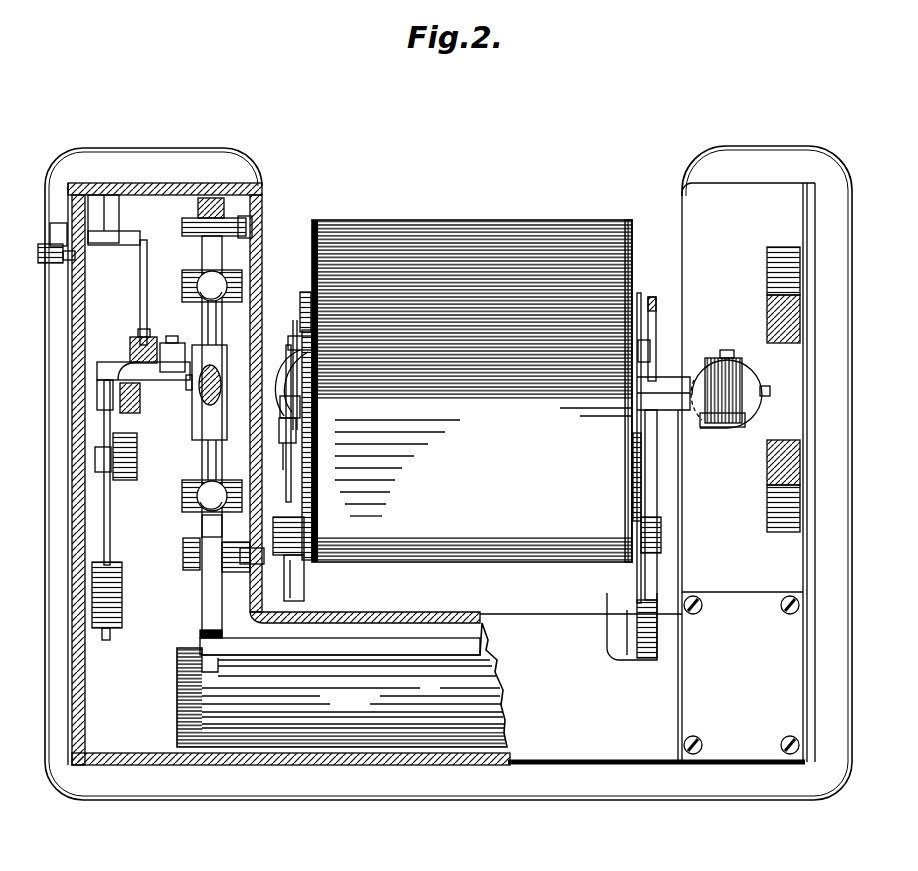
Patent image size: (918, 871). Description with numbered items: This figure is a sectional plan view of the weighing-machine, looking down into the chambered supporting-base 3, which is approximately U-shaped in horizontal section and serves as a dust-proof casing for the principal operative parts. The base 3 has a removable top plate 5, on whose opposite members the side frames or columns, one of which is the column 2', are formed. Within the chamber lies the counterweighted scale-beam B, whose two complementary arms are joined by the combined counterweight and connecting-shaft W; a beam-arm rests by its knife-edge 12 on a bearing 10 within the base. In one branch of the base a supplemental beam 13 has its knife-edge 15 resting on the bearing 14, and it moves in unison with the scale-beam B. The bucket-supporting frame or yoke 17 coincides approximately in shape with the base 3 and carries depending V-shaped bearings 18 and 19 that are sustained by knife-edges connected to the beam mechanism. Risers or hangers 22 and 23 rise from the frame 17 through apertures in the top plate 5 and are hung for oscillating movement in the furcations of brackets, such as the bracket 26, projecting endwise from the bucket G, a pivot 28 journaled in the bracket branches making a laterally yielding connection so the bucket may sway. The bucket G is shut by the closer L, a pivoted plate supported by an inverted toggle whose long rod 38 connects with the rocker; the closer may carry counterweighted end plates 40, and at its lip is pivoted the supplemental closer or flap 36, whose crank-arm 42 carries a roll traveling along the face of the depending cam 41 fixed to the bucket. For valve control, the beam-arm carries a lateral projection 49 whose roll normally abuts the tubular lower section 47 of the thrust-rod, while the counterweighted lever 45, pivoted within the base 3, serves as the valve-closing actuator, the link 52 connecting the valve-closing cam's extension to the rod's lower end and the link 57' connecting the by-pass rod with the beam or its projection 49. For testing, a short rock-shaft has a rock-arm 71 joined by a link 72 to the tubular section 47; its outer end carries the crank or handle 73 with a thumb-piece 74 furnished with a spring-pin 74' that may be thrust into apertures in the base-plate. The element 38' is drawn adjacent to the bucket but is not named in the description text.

The side frame or column 2' is at (754, 472).
The chambered supporting-base 3 is at (488, 801).
The top plate 5 is at (565, 744).
The bearing 10 is at (201, 574).
The knife-edge 12 is at (185, 556).
The supplemental beam 13 is at (216, 188).
The bearing 14 is at (183, 194).
The knife-edge 15 is at (198, 228).
The bucket-supporting frame or yoke 17 is at (206, 526).
The bearing 18 is at (222, 278).
The bearing 19 is at (196, 495).
The riser or hanger 22 is at (192, 405).
The riser or hanger 23 is at (722, 428).
The flanged bracket 26 is at (674, 388).
The pivot 28 is at (725, 360).
The supplemental closer or flap 36 is at (301, 303).
The rod 38 is at (259, 444).
The shutter shaft 38' is at (675, 448).
The counterweighted end plate 40 is at (304, 585).
The cam 41 is at (291, 478).
The crank-arm 42 is at (283, 385).
The counterweighted lever 45 is at (110, 494).
The tubular lower section of rod 47 is at (146, 344).
The lateral projection 49 is at (208, 376).
The link 52 is at (105, 381).
The link 57' is at (177, 341).
The rock-arm 71 is at (132, 244).
The link 72 is at (141, 280).
The crank or handle 73 is at (67, 236).
The thumb-piece 74 is at (76, 273).
The spring-pin 74' is at (90, 266).
The scale-beam B is at (208, 660).
The bucket G is at (542, 565).
The closer L is at (313, 510).
The combined counterweight and connecting-shaft W is at (342, 685).